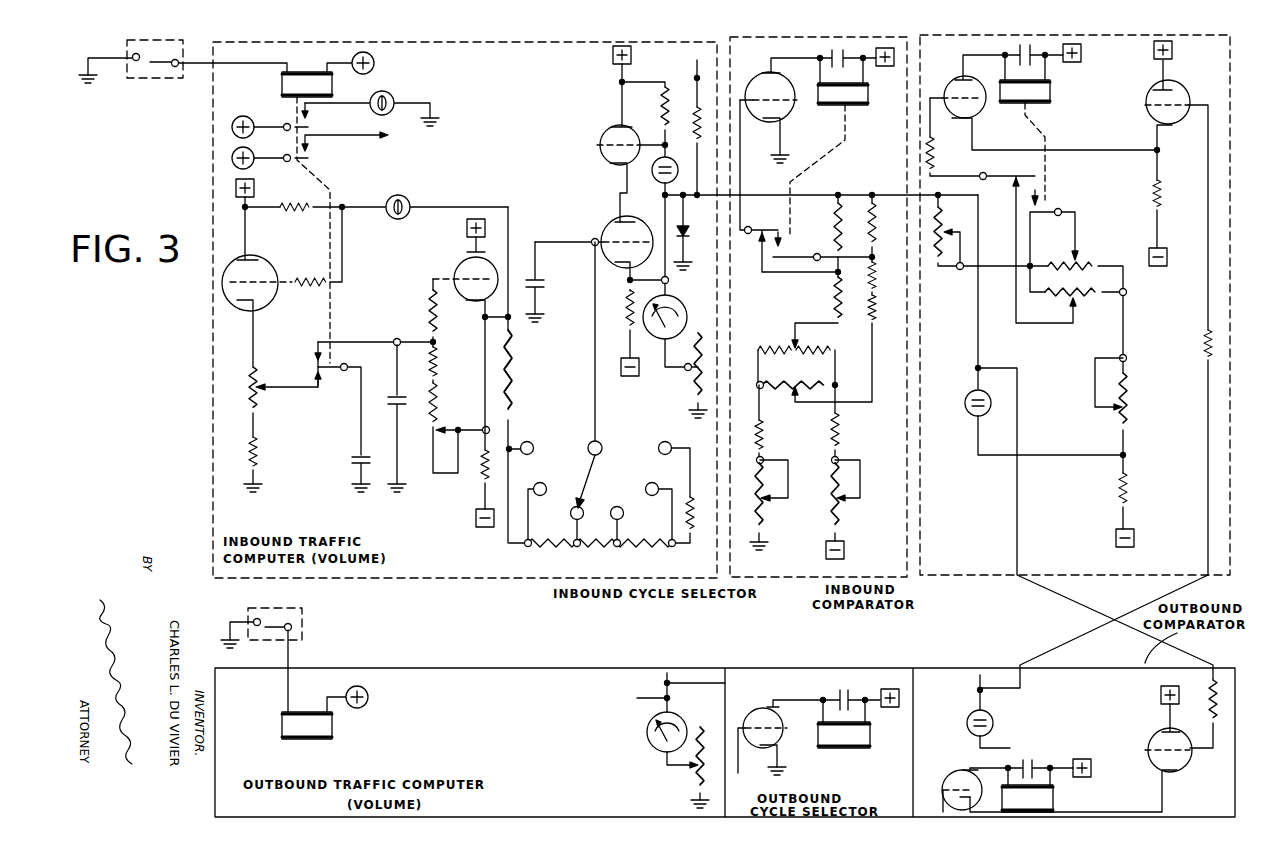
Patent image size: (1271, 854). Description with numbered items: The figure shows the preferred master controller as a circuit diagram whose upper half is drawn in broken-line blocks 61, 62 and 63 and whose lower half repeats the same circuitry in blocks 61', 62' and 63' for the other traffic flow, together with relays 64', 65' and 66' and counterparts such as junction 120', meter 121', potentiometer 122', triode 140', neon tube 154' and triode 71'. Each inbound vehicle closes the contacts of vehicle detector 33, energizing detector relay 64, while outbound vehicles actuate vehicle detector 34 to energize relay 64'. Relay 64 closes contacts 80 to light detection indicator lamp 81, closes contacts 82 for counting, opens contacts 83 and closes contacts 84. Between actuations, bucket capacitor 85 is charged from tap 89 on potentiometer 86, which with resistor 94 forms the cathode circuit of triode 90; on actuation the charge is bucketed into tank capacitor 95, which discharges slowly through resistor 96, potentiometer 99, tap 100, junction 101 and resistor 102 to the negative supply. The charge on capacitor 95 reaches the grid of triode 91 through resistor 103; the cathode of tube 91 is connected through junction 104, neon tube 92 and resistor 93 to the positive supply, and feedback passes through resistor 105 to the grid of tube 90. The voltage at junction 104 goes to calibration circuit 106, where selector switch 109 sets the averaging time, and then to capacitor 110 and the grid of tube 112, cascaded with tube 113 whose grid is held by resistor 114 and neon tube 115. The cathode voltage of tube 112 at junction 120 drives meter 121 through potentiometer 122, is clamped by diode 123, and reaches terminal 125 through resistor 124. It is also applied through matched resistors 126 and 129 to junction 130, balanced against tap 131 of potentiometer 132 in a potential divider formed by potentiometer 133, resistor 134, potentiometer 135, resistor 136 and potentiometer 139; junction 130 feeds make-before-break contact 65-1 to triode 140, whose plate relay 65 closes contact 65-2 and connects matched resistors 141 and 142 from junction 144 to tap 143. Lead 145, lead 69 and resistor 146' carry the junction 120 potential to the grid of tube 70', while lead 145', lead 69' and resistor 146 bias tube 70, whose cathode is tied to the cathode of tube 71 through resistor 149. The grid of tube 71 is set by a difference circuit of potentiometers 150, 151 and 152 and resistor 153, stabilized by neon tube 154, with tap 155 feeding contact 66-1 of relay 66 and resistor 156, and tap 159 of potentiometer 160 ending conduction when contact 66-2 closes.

The vehicle detector 33 is at (145, 78).
The vehicle detector 34 is at (305, 627).
The broken line block 61 is at (196, 168).
The block 61' is at (402, 654).
The broken line block 62 is at (784, 593).
The block 62' is at (793, 651).
The broken line block 63 is at (953, 593).
The block 63' is at (950, 650).
The detector relay 64 is at (328, 207).
The detector relay 64' is at (325, 712).
The relay 65 is at (842, 142).
The relay 65' is at (858, 718).
The make-before-break contact 65-1 is at (752, 254).
The contact 65-2 is at (784, 250).
The relay 66 is at (1040, 122).
The relay 66' is at (1046, 785).
The make-before-break contact 66-1 is at (1008, 176).
The contact 66-2 is at (1040, 209).
The lead 69 is at (1095, 525).
The lead 69' is at (1094, 554).
The triode 70 is at (1161, 185).
The triode 70' is at (1081, 749).
The triode 71 is at (1043, 102).
The tube 71' is at (970, 774).
The contacts 80 is at (312, 122).
The detection indicator lamp 81 is at (386, 92).
The contacts 82 is at (312, 155).
The contacts 83 is at (308, 373).
The contacts 84 is at (308, 353).
The bucket capacitor 85 is at (348, 459).
The potentiometer 86 is at (262, 404).
The tap 89 is at (278, 390).
The triode 90 is at (258, 305).
The triode 91 is at (453, 262).
The neon tube 92 is at (398, 195).
The resistor 93 is at (288, 206).
The resistor 94 is at (260, 455).
The tank capacitor 95 is at (387, 384).
The resistor 96 is at (439, 366).
The potentiometer 99 is at (436, 416).
The tap 100 is at (444, 476).
The junction 101 is at (483, 428).
The resistor 102 is at (482, 482).
The resistor 103 is at (424, 315).
The junction 104 is at (508, 330).
The resistor 105 is at (312, 280).
The calibration circuit 106 is at (634, 481).
The selector switch 109 is at (584, 473).
The capacitor 110 is at (545, 282).
The tube 112 is at (644, 220).
The tube 113 is at (600, 129).
The resistor 114 is at (662, 91).
The neon tube 115 is at (679, 165).
The junction 120 is at (679, 245).
The junction 120' is at (681, 692).
The meter 121 is at (678, 330).
The meter 121' is at (655, 740).
The potentiometer 122 is at (683, 375).
The resistor 122' is at (679, 767).
The diode 123 is at (700, 218).
The resistor 124 is at (682, 104).
The terminal 125 is at (695, 60).
The matched resistor 126 is at (830, 223).
The matched resistor 129 is at (826, 300).
The junction 130 is at (834, 280).
The tap 131 is at (785, 340).
The potentiometer 132 is at (810, 346).
The potentiometer 133 is at (834, 484).
The resistor 134 is at (838, 432).
The potentiometer 135 is at (790, 376).
The resistor 136 is at (763, 445).
The potentiometer 139 is at (762, 527).
The triode 140 is at (782, 144).
The tube 140' is at (780, 721).
The matched resistor 141 is at (874, 224).
The matched resistor 142 is at (873, 324).
The tap 143 is at (793, 398).
The junction 144 is at (874, 264).
The lead 145 is at (960, 292).
The lead 145' is at (957, 683).
The resistor 146 is at (1188, 452).
The resistor 146' is at (1197, 714).
The resistor 149 is at (1146, 184).
The potentiometer 150 is at (947, 230).
The potentiometer 151 is at (1068, 287).
The potentiometer 152 is at (1125, 398).
The resistor 153 is at (1127, 493).
The neon tube 154 is at (1032, 422).
The lamp 154' is at (1004, 719).
The tap 155 is at (1076, 303).
The resistor 156 is at (936, 162).
The tap 159 is at (1078, 254).
The potentiometer 160 is at (1054, 260).